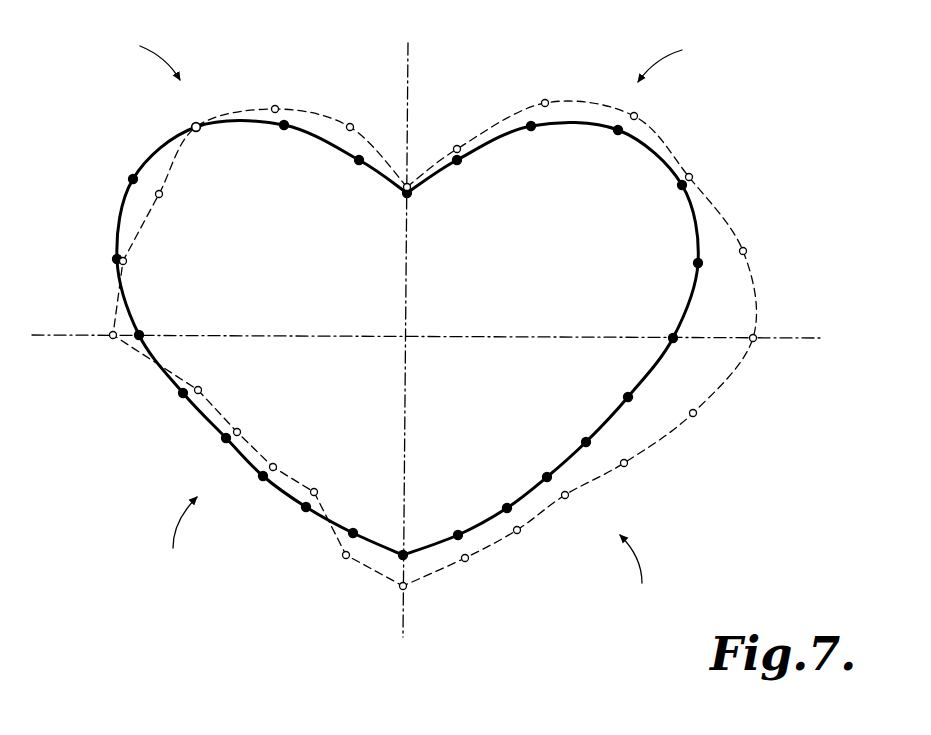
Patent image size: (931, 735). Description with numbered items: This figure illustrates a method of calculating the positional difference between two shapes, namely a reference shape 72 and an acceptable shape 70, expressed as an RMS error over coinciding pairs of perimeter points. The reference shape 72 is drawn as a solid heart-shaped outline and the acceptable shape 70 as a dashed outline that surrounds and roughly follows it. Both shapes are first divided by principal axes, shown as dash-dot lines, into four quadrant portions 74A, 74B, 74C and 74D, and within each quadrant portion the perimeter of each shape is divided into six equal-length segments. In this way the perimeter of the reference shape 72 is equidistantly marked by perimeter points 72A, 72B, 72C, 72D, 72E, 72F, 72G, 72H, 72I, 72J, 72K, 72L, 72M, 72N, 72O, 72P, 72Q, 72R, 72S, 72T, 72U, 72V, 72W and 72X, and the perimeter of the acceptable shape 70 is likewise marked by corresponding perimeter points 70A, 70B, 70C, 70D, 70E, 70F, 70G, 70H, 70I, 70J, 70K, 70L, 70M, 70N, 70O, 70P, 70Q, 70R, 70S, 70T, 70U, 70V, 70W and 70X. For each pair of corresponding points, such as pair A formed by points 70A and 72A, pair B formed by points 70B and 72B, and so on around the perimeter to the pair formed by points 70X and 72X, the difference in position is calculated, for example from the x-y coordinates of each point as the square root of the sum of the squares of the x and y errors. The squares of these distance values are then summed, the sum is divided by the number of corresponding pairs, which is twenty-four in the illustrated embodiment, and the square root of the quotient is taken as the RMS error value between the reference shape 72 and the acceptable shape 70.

The acceptable shape 70 is at (587, 98).
The reference shape 72 is at (497, 135).
The quadrant portion 74A is at (681, 57).
The quadrant portion 74B is at (642, 575).
The quadrant portion 74C is at (177, 538).
The quadrant portion 74D is at (135, 54).
The perimeter point 70A is at (441, 137).
The perimeter point 70B is at (531, 93).
The perimeter point 70C is at (652, 106).
The perimeter point 70D is at (712, 168).
The perimeter point 70E is at (763, 241).
The perimeter point 70F is at (776, 329).
The perimeter point 70G is at (713, 421).
The perimeter point 70H is at (645, 472).
The perimeter point 70I is at (583, 505).
The perimeter point 70J is at (534, 539).
The perimeter point 70K is at (487, 567).
The perimeter point 70L is at (423, 596).
The perimeter point 70M is at (327, 569).
The perimeter point 70N is at (334, 482).
The perimeter point 70O is at (289, 457).
The perimeter point 70P is at (255, 422).
The perimeter point 70Q is at (218, 380).
The perimeter point 70R is at (101, 347).
The perimeter point 70S is at (143, 264).
The perimeter point 70T is at (181, 199).
The perimeter point 70U is at (216, 137).
The perimeter point 70V is at (267, 100).
The perimeter point 70W is at (374, 116).
The perimeter point 70X is at (411, 172).
The perimeter point 72A is at (471, 172).
The perimeter point 72B is at (537, 139).
The perimeter point 72C is at (613, 141).
The perimeter point 72D is at (662, 186).
The perimeter point 72E is at (678, 264).
The perimeter point 72F is at (658, 328).
The perimeter point 72G is at (612, 386).
The perimeter point 72H is at (567, 431).
The perimeter point 72I is at (532, 466).
The perimeter point 72J is at (491, 498).
The perimeter point 72K is at (443, 523).
The perimeter point 72L is at (404, 546).
The perimeter point 72M is at (372, 523).
The perimeter point 72N is at (287, 518).
The perimeter point 72O is at (247, 486).
The perimeter point 72P is at (209, 450).
The perimeter point 72Q is at (164, 401).
The perimeter point 72R is at (160, 324).
The perimeter point 72S is at (99, 258).
The perimeter point 72T is at (115, 177).
The perimeter point 72U is at (185, 118).
The perimeter point 72V is at (283, 136).
The perimeter point 72W is at (344, 172).
The perimeter point 72X is at (404, 205).